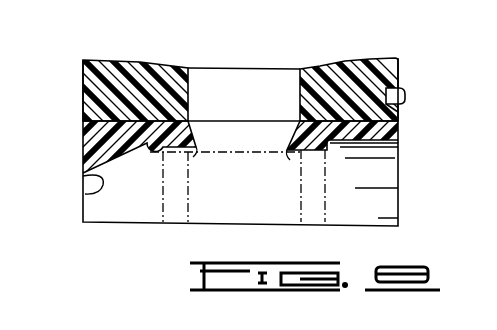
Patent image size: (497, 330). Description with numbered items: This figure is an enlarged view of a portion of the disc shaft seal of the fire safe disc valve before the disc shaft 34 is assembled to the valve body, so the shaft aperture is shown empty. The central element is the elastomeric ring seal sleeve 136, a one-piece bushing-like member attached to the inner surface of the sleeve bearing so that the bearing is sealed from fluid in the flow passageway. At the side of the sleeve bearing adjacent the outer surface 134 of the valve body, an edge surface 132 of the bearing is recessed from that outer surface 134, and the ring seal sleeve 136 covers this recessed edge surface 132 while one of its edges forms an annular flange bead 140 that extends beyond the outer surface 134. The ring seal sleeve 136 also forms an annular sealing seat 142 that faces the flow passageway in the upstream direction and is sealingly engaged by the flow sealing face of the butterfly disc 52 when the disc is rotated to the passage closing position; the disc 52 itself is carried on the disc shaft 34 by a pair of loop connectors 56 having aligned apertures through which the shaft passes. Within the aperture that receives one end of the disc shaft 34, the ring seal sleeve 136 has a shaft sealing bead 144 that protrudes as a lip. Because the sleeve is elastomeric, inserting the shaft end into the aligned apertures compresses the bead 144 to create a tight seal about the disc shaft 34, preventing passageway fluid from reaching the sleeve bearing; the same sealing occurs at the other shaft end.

The disc shaft 34 is at (244, 110).
The outer surface of the valve body 134 is at (402, 66).
The annular flange bead 140 is at (406, 92).
The edge surface 132 is at (399, 107).
The ring seal sleeve 136 is at (400, 128).
The shaft sealing bead 144 is at (193, 157).
The loop connectors 56 is at (312, 195).
The annular sealing seat 142 is at (97, 193).
The butterfly disc 52 is at (108, 228).